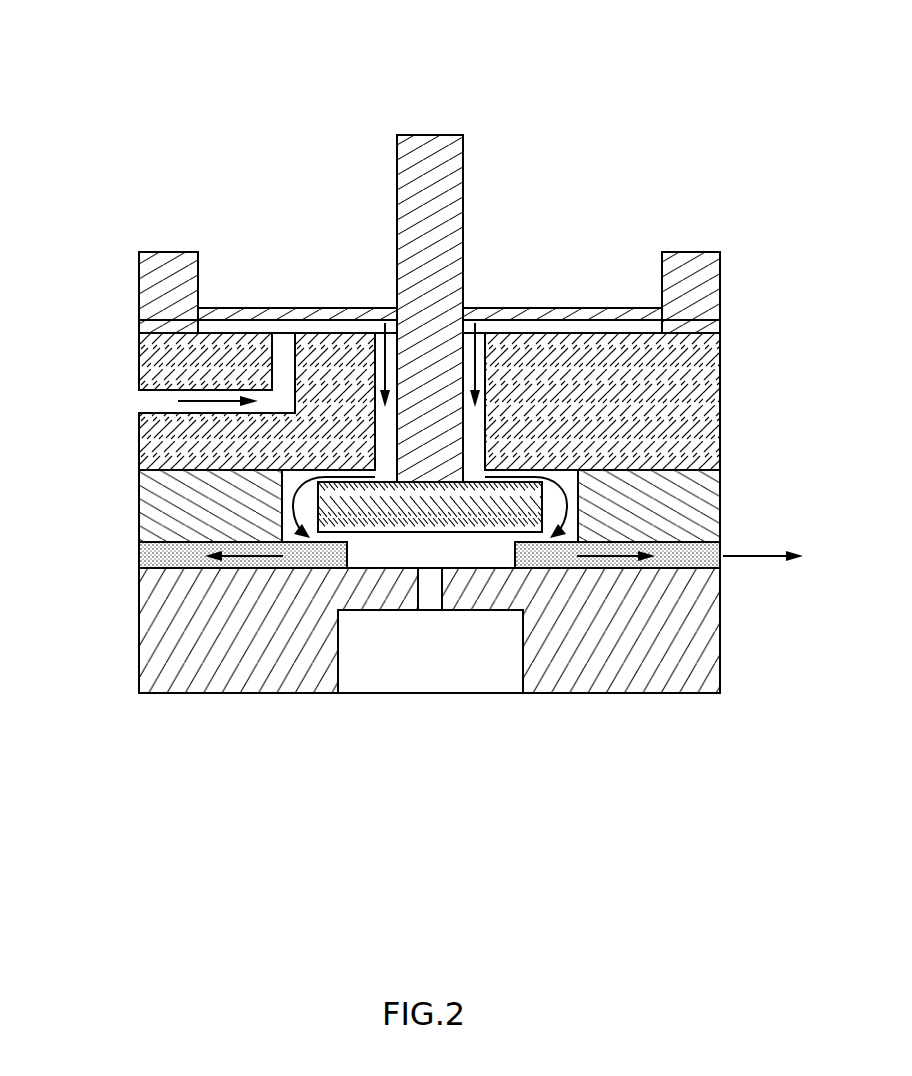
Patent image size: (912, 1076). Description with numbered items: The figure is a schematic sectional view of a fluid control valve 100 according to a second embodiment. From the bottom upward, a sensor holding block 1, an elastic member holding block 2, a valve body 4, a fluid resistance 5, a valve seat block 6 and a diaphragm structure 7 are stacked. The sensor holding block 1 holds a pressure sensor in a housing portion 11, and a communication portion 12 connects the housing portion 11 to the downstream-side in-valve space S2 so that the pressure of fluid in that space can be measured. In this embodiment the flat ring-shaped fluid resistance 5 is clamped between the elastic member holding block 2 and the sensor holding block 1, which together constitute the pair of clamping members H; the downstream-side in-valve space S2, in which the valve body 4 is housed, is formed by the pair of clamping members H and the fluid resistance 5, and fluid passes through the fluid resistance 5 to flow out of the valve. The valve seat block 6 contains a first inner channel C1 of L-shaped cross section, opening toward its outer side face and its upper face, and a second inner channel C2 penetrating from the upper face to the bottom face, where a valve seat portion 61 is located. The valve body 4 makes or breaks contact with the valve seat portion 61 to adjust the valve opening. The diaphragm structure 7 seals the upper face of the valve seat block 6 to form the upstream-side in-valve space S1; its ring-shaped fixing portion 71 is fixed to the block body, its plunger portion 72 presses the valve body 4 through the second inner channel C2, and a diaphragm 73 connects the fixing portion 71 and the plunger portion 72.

The fluid control valve 100 is at (175, 75).
The diaphragm structure 7 is at (479, 281).
The fixing portion 71 is at (170, 252).
The plunger portion 72 is at (397, 148).
The diaphragm 73 is at (290, 308).
The upstream-side in-valve space S1 is at (345, 326).
The valve seat block 6 is at (720, 401).
The first inner channel C1 is at (139, 403).
The second inner channel C2 is at (483, 372).
The valve seat portion 61 is at (350, 467).
The elastic member holding block 2 is at (139, 537).
The valve body 4 is at (461, 532).
The fluid resistance 5 is at (247, 570).
The downstream-side in-valve space S2 is at (385, 548).
The sensor holding block 1 is at (139, 580).
The communication portion 12 is at (442, 590).
The housing portion 11 is at (338, 650).
The pair of clamping members H is at (48, 540).